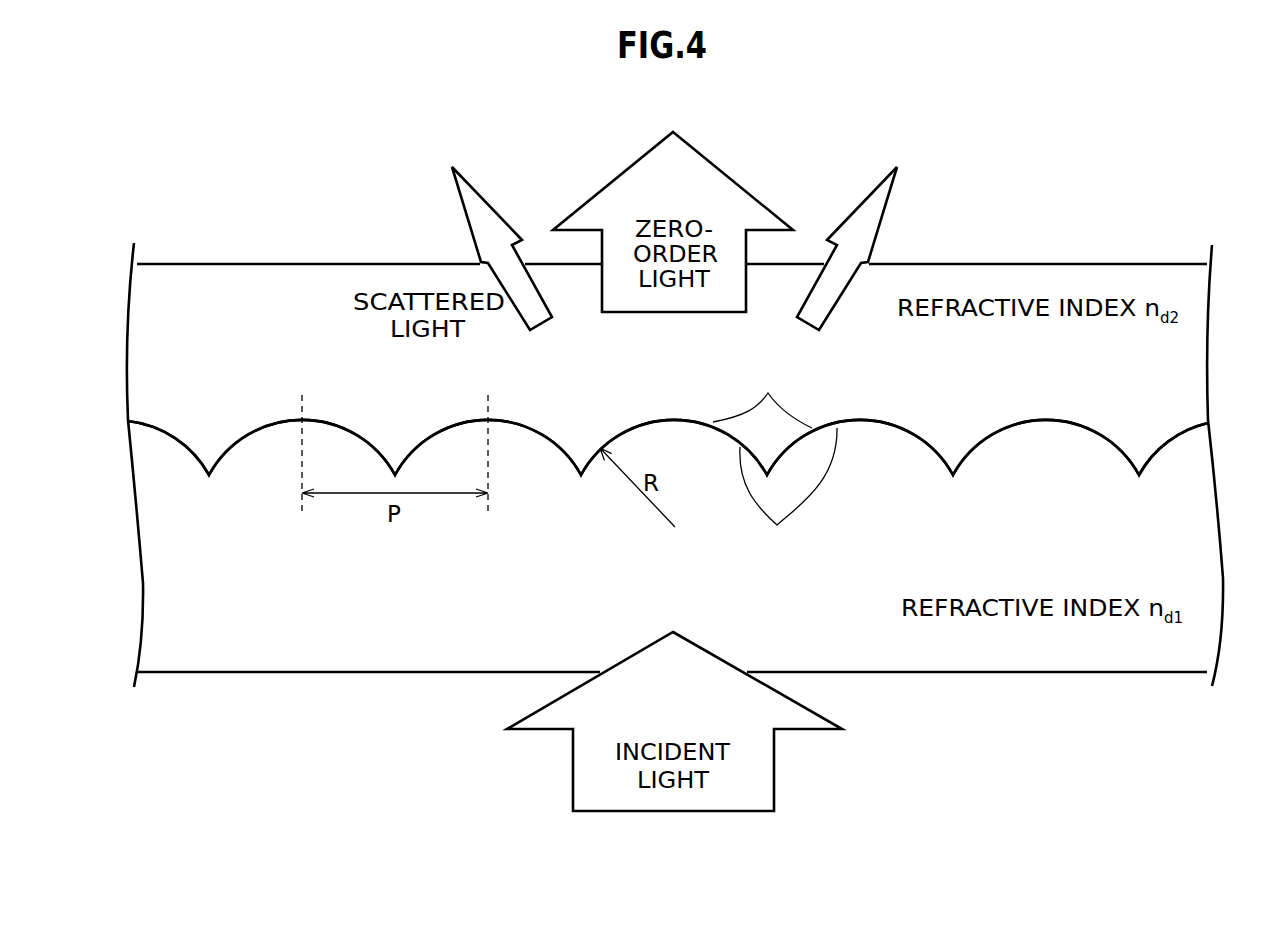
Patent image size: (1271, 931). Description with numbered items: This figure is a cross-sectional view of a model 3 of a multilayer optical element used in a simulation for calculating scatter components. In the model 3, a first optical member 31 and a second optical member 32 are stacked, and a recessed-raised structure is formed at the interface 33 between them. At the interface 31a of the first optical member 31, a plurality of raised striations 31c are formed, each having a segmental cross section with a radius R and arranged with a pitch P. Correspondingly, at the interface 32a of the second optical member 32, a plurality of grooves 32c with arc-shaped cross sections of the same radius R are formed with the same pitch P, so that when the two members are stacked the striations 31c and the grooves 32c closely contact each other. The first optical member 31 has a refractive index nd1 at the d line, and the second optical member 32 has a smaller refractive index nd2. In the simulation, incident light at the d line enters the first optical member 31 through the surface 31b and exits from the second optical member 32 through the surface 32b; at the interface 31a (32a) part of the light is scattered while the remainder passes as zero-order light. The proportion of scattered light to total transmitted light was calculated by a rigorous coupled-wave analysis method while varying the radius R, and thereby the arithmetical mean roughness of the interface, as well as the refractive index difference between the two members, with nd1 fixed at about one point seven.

The model 3 is at (1111, 157).
The first optical member 31 is at (227, 684).
The interface of the first optical member 31a is at (893, 412).
The surface of the first optical member 31b is at (328, 673).
The raised striations 31c is at (762, 393).
The second optical member 32 is at (228, 252).
The interface of the second optical member 32a is at (915, 455).
The surface of the second optical member 32b is at (328, 263).
The grooves 32c is at (788, 499).
The interface 33 is at (1185, 417).